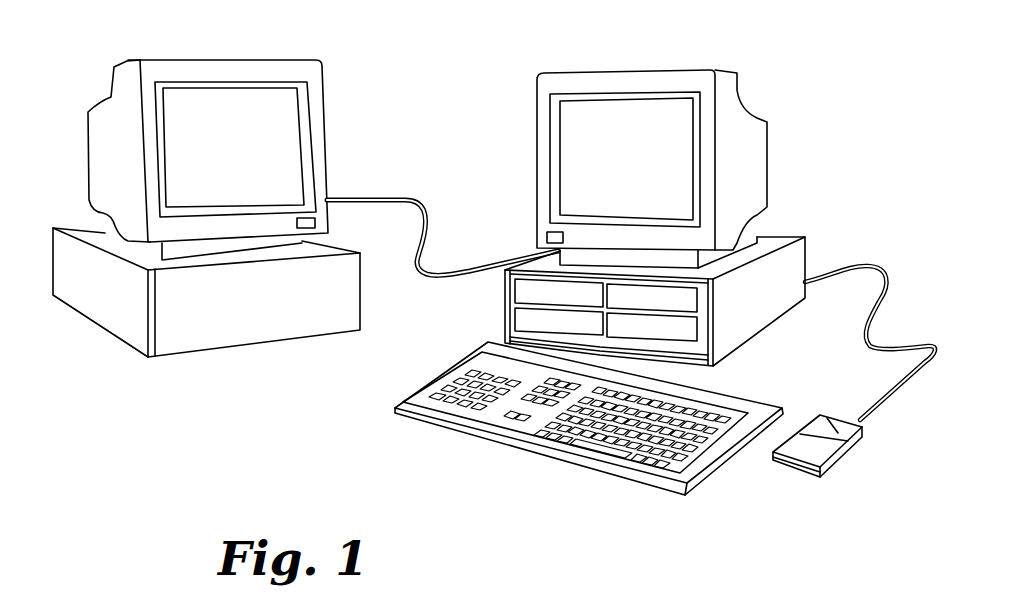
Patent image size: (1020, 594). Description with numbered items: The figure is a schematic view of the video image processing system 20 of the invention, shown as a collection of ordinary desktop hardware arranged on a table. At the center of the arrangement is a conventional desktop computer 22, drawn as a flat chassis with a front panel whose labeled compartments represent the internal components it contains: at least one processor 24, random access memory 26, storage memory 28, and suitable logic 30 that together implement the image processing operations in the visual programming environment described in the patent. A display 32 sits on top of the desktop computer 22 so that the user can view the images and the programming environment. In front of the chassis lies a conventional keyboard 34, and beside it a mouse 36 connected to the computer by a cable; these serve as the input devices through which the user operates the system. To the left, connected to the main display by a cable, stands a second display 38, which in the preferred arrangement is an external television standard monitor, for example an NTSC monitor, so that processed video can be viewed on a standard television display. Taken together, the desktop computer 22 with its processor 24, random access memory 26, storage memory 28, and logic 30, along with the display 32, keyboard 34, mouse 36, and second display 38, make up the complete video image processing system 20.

The video image processing system 20 is at (494, 269).
The desktop computer 22 is at (415, 457).
The processor 24 is at (517, 322).
The random access memory 26 is at (513, 286).
The storage memory 28 is at (697, 302).
The logic 30 is at (697, 325).
The display 32 is at (713, 68).
The keyboard 34 is at (525, 452).
The mouse 36 is at (810, 473).
The second display 38 is at (137, 60).